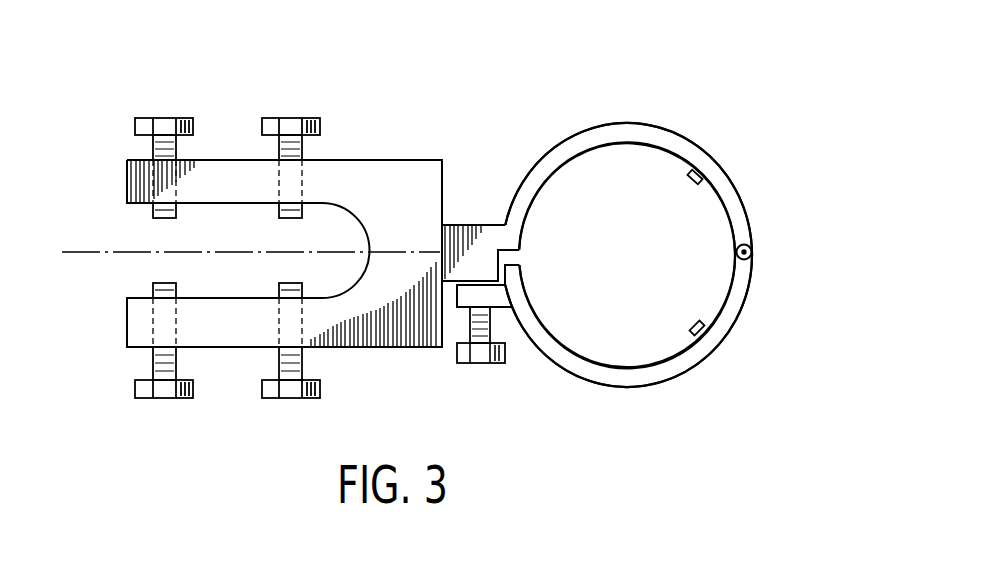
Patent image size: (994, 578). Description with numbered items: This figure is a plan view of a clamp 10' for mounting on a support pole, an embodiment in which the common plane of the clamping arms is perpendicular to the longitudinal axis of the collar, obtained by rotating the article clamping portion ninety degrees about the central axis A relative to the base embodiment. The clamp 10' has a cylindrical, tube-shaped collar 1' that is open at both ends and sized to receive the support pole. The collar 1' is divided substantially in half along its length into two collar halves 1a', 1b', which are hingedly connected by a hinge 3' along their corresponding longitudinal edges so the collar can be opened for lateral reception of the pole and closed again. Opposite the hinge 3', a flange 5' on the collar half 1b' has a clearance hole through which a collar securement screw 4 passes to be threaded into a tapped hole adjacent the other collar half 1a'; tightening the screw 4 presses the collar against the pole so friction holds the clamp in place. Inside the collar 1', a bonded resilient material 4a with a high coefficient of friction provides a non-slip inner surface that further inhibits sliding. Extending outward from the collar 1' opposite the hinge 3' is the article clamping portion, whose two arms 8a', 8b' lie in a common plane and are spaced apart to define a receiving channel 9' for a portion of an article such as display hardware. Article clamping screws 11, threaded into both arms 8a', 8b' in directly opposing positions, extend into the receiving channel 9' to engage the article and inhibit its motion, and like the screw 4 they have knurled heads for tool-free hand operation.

The clamp 10' is at (369, 175).
The arm 8a' is at (253, 169).
The arm 8b' is at (254, 315).
The receiving channel 9' is at (211, 248).
The central axis A is at (100, 255).
The article clamping screws 11 is at (160, 118).
The collar 1' is at (711, 255).
The collar half 1a' is at (678, 187).
The collar half 1b' is at (679, 319).
The hinge 3' is at (775, 250).
The resilient material 4a is at (697, 322).
The collar securement screw 4 is at (472, 363).
The flange 5' is at (502, 362).